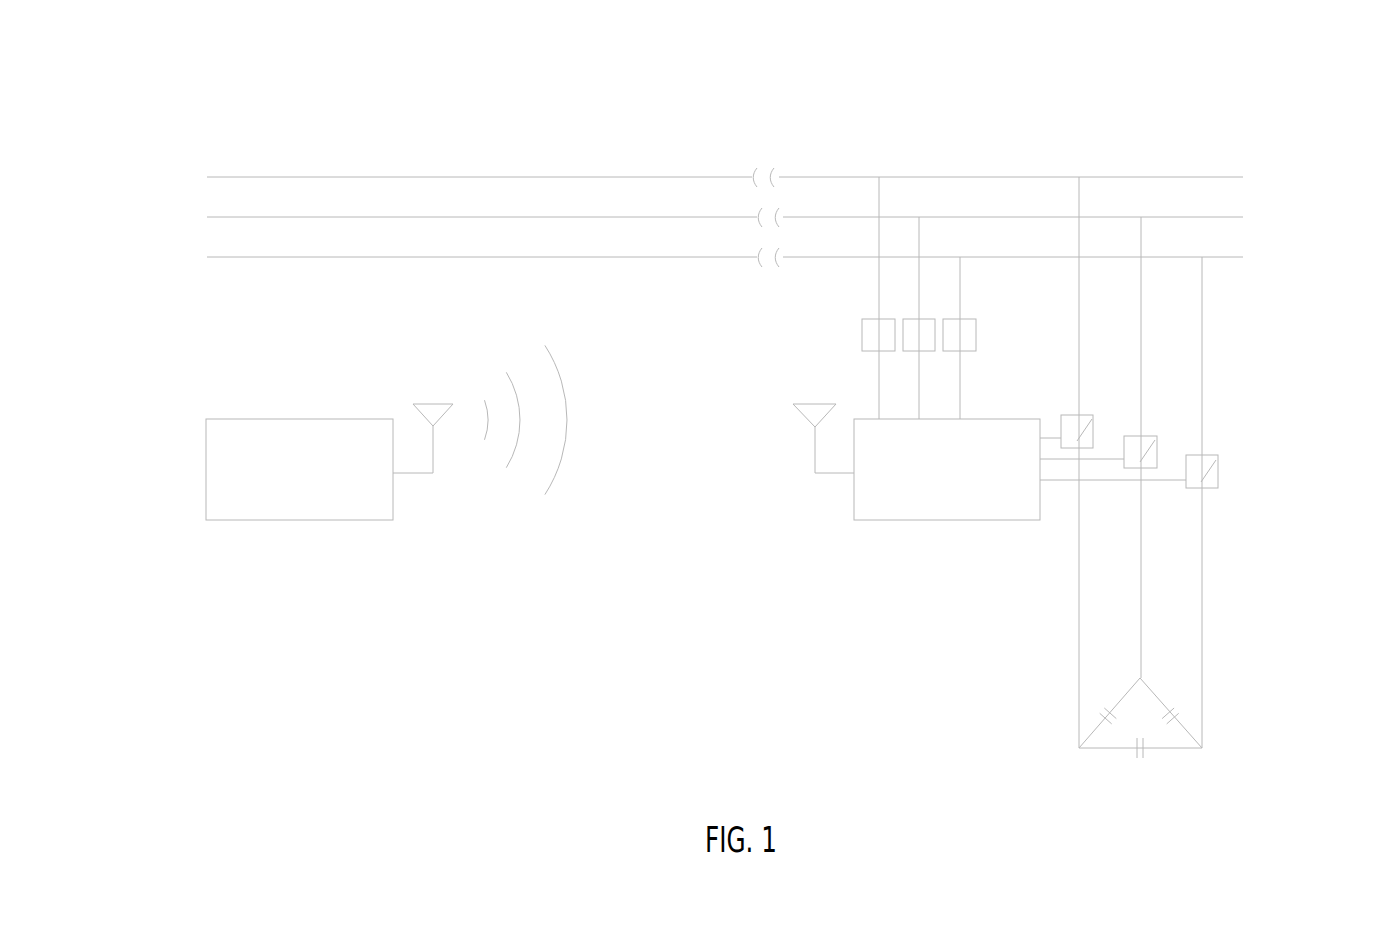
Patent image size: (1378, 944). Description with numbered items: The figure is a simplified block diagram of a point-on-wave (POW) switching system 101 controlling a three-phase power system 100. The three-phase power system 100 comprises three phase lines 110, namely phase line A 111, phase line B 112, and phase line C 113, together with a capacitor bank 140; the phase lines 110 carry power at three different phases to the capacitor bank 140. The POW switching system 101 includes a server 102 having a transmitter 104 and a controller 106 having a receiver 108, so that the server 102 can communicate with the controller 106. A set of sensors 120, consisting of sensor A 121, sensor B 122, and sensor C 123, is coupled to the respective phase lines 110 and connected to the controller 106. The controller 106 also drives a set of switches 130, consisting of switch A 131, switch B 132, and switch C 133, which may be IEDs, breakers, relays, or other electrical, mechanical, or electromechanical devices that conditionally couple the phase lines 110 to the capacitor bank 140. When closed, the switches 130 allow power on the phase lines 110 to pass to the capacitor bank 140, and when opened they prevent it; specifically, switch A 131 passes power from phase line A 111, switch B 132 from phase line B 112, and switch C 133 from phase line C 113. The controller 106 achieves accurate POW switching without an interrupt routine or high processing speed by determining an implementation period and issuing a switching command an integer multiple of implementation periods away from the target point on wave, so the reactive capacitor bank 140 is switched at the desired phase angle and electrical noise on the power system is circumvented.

The three-phase power system 100 is at (983, 73).
The POW switching system 101 is at (888, 642).
The server 102 is at (208, 440).
The transmitter 104 is at (433, 464).
The controller 106 is at (938, 520).
The receiver 108 is at (815, 466).
The phase lines 110 is at (753, 208).
The phase line A 111 is at (220, 177).
The phase line B 112 is at (220, 217).
The phase line C 113 is at (222, 257).
The sensors 120 is at (915, 334).
The sensor A 121 is at (862, 333).
The sensor B 122 is at (920, 352).
The sensor C 123 is at (976, 333).
The switches 130 is at (1187, 451).
The switch A 131 is at (1093, 415).
The switch B 132 is at (1157, 452).
The switch C 133 is at (1244, 464).
The capacitor bank 140 is at (1152, 766).